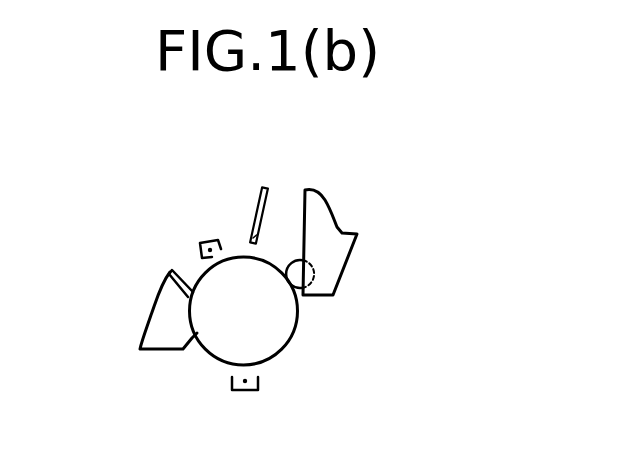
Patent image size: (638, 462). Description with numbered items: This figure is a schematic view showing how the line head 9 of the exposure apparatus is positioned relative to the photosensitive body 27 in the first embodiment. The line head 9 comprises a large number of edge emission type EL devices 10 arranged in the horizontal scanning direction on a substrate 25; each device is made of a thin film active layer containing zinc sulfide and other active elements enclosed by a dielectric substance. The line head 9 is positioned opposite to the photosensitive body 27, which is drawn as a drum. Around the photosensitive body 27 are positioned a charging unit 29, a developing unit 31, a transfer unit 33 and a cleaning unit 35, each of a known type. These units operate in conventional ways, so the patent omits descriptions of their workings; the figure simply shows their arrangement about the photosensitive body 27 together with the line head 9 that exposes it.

The line head 9 is at (278, 175).
The edge emission type EL device 10 is at (259, 233).
The substrate 25 is at (261, 201).
The photosensitive body 27 is at (287, 343).
The charging unit 29 is at (200, 241).
The developing unit 31 is at (333, 228).
The transfer unit 33 is at (245, 392).
The cleaning unit 35 is at (167, 340).